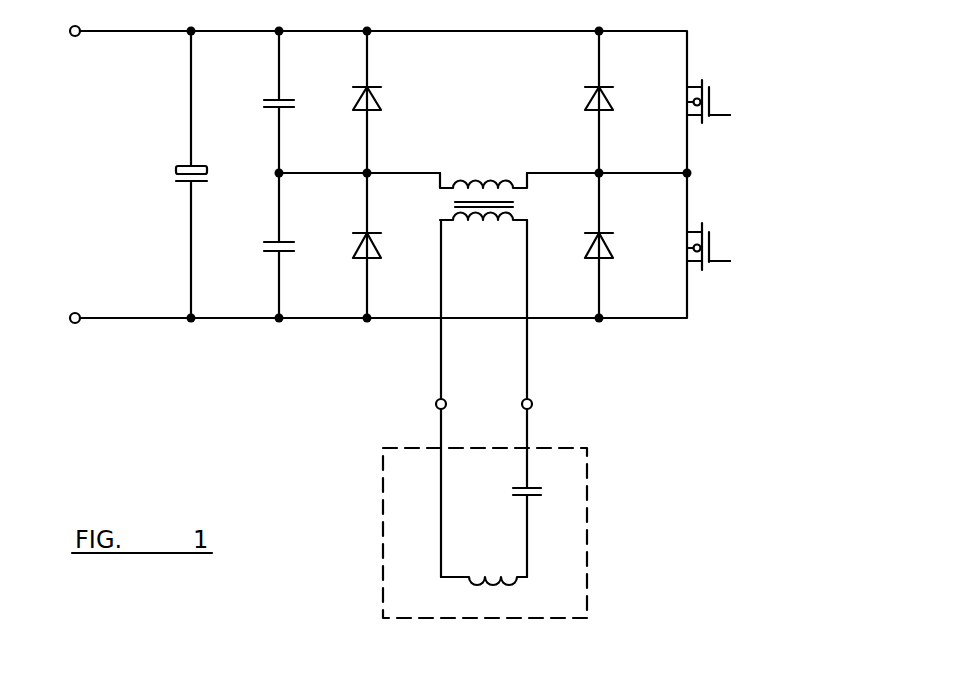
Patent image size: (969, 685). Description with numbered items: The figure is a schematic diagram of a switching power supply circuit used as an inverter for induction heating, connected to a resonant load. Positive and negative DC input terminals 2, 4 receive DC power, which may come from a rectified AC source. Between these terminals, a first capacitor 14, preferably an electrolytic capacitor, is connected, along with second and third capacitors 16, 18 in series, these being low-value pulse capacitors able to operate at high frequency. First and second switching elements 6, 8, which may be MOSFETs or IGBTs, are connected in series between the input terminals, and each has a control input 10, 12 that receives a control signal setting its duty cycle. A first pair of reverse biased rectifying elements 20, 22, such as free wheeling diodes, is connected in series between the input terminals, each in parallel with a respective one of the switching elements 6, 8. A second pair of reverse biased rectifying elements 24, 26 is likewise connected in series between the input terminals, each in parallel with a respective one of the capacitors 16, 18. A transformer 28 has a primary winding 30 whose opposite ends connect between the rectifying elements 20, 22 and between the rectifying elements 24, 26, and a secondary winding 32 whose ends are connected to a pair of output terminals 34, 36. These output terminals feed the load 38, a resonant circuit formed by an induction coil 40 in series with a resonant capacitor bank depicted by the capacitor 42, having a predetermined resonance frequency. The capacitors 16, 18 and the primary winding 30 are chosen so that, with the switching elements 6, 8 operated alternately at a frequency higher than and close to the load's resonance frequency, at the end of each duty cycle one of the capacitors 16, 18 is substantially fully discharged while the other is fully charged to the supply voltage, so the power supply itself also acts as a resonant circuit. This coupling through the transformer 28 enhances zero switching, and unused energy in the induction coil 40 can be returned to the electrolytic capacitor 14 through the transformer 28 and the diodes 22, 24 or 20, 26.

The positive DC input terminal 2 is at (75, 37).
The negative DC input terminal 4 is at (75, 312).
The first switching element 6 is at (720, 92).
The second switching element 8 is at (720, 240).
The control input 10 is at (721, 117).
The control input 12 is at (722, 264).
The first capacitor 14 is at (184, 165).
The second capacitor 16 is at (273, 100).
The third capacitor 18 is at (273, 242).
The rectifying element 20 is at (592, 98).
The rectifying element 22 is at (612, 249).
The rectifying element 24 is at (378, 100).
The rectifying element 26 is at (355, 246).
The transformer 28 is at (490, 194).
The primary winding 30 is at (490, 191).
The secondary winding 32 is at (492, 220).
The output terminal 34 is at (436, 404).
The output terminal 36 is at (532, 404).
The load 38 is at (439, 533).
The induction coil 40 is at (500, 541).
The capacitor 42 is at (532, 498).